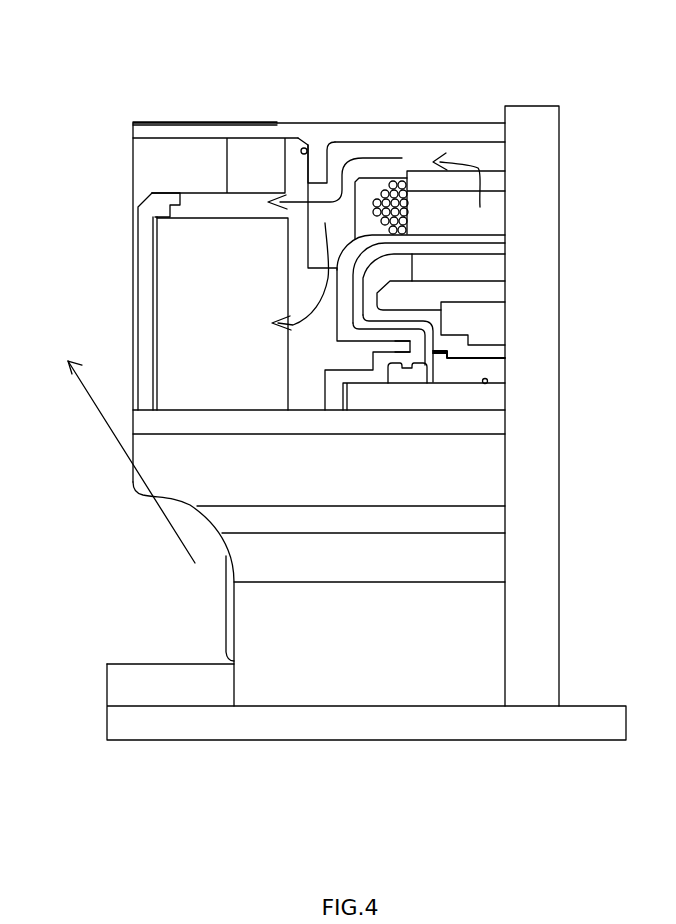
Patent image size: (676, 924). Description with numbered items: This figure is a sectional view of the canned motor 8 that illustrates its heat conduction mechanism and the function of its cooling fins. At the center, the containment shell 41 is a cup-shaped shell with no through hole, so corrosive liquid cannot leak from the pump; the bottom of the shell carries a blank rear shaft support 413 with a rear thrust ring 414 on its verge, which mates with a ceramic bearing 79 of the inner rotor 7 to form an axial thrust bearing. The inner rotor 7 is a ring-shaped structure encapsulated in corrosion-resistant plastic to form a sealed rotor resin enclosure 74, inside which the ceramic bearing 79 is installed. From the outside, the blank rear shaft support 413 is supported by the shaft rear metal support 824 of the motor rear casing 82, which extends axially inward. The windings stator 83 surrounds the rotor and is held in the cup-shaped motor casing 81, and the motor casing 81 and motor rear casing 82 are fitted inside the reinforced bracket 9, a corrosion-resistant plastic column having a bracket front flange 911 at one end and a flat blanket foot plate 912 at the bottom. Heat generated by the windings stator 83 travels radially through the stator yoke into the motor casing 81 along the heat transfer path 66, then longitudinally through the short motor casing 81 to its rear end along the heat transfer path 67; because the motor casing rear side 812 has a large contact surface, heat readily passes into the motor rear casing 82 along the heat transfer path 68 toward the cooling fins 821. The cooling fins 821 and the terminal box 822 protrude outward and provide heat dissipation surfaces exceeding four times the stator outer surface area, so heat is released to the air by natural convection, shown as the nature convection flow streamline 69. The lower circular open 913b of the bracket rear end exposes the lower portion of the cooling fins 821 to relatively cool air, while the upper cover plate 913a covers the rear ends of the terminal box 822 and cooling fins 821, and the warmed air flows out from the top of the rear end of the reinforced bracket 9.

The inner rotor 7 is at (505, 288).
The canned motor 8 is at (485, 143).
The reinforced bracket 9 is at (343, 124).
The containment shell 41 is at (497, 237).
The heat transfer path from the stator 66 is at (510, 162).
The heat transfer path from the motor casing 67 is at (342, 188).
The heat transfer path to the cooling fins 68 is at (320, 290).
The nature convection flow streamline 69 is at (115, 407).
The rotor resin enclosure 74 is at (490, 247).
The ceramic bearing 79 is at (473, 373).
The motor casing 81 is at (428, 158).
The motor rear casing 82 is at (293, 160).
The windings stator 83 is at (488, 213).
The blank rear shaft support 413 is at (400, 337).
The rear thrust ring 414 is at (408, 377).
The motor casing rear side 812 is at (323, 213).
The cooling fins 821 is at (208, 205).
The terminal box 822 is at (263, 165).
The shaft rear metal support 824 is at (350, 357).
The bracket front flange 911 is at (532, 143).
The blanket foot plate 912 is at (425, 725).
The upper cover plate 913a is at (140, 138).
The lower circular open 913b is at (197, 508).